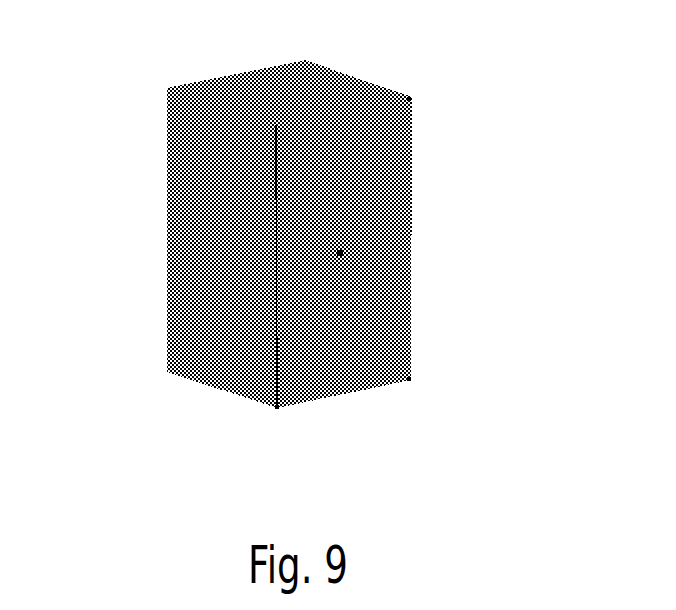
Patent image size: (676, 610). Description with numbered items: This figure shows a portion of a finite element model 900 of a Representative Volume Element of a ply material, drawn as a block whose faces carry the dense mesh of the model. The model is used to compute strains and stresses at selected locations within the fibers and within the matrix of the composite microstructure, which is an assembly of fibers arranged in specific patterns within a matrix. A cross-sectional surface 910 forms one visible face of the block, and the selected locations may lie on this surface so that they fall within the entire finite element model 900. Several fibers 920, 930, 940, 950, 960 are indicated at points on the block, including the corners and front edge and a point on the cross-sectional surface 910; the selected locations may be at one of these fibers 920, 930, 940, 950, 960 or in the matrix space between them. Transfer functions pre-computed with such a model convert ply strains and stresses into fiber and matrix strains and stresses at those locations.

The finite element model 900 is at (122, 164).
The cross-sectional surface 910 is at (392, 180).
The fiber 920 is at (407, 99).
The fiber 930 is at (409, 379).
The fiber 940 is at (341, 253).
The fiber 950 is at (277, 408).
The fiber 960 is at (277, 125).